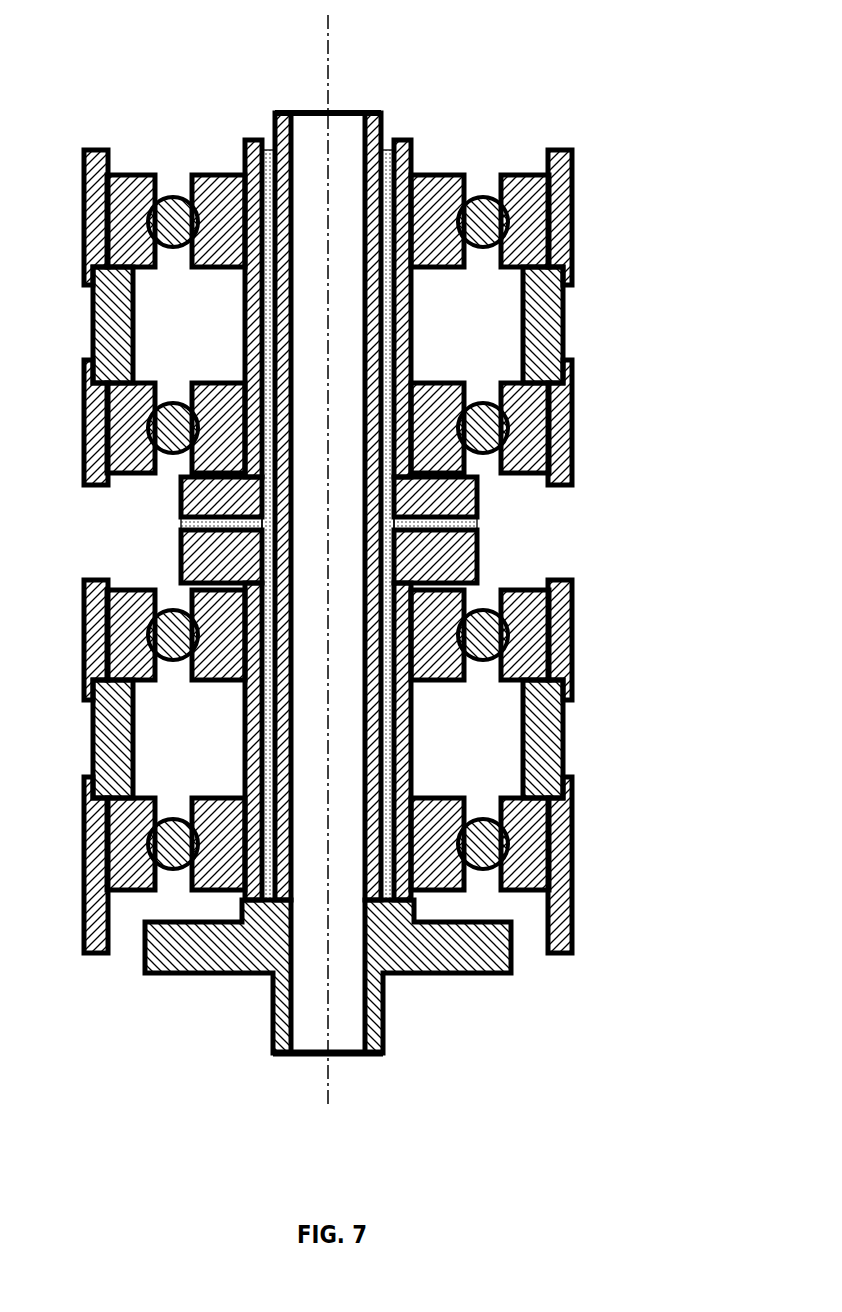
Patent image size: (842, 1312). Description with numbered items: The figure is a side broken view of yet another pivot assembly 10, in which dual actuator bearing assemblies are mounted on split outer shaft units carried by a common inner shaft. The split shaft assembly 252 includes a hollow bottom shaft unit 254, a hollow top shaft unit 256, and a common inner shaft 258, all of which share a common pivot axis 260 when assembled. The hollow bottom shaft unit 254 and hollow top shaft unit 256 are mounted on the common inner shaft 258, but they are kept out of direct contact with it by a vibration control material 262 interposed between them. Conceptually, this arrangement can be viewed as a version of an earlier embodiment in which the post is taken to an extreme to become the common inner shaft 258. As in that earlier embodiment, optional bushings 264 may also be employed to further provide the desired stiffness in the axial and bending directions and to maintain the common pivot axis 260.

The pivot assembly 10 is at (608, 92).
The split shaft assembly 252 is at (167, 165).
The hollow bottom shaft unit 254 is at (411, 767).
The hollow top shaft unit 256 is at (410, 143).
The common inner shaft 258 is at (398, 975).
The common pivot axis 260 is at (328, 52).
The vibration control material 262 is at (268, 150).
The bushings 264 is at (478, 497).